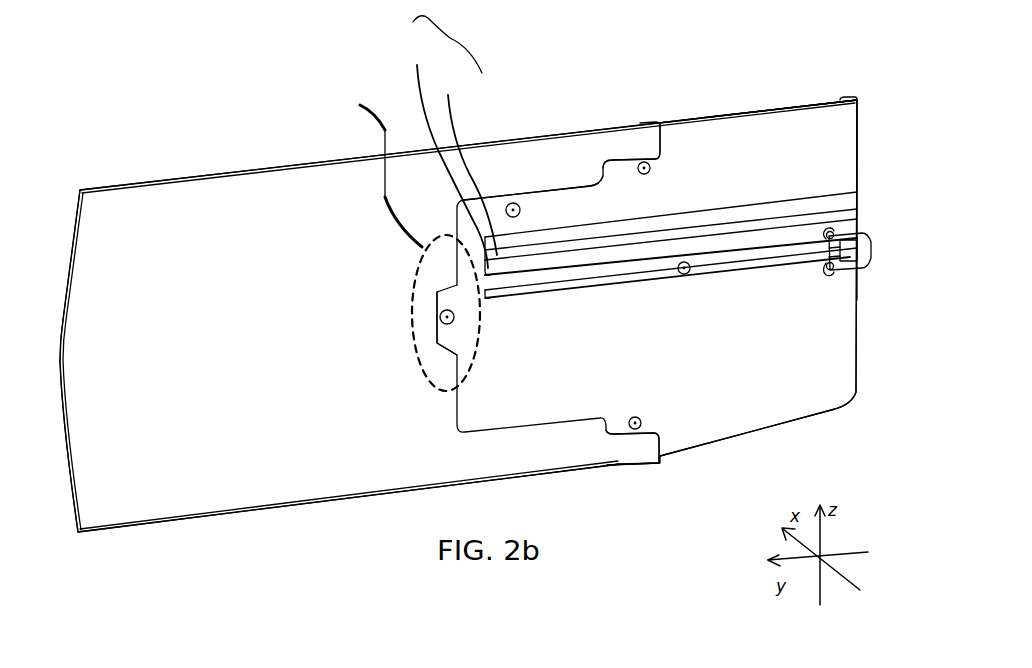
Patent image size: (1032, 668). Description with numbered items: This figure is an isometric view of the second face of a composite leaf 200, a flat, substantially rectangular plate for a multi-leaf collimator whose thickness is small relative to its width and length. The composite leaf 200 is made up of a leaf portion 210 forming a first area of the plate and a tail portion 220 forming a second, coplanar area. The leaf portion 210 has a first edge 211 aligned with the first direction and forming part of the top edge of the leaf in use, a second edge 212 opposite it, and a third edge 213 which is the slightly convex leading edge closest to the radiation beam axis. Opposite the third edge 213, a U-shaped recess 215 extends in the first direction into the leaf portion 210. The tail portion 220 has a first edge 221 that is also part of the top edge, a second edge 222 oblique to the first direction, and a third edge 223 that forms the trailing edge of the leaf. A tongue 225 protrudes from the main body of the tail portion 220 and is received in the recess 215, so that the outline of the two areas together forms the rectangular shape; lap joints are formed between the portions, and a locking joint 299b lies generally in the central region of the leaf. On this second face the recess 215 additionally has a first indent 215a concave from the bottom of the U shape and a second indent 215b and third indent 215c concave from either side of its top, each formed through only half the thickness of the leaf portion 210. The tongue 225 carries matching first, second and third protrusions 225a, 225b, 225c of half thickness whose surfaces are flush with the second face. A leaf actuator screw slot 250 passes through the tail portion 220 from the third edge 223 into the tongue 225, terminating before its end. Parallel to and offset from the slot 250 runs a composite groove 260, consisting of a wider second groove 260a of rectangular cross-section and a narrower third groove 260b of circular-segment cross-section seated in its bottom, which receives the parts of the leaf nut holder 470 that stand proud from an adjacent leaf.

The composite leaf 200 is at (145, 104).
The leaf portion 210 is at (471, 309).
The first edge 211 is at (316, 164).
The second edge 212 is at (273, 509).
The third edge 213 is at (60, 345).
The U-shaped recess 215 is at (513, 203).
The first indent 215a is at (440, 315).
The second indent 215b is at (635, 430).
The third indent 215c is at (644, 162).
The tail portion 220 is at (755, 167).
The first edge 221 is at (799, 106).
The second edge 222 is at (757, 432).
The third edge 223 is at (858, 150).
The tongue 225 is at (570, 210).
The first protrusion 225a is at (440, 345).
The second protrusion 225b is at (614, 432).
The third protrusion 225c is at (627, 172).
The leaf actuator screw slot 250 is at (684, 262).
The composite groove 260 is at (447, 42).
The second groove 260a is at (443, 153).
The third groove 260b is at (467, 159).
The joint 299b is at (379, 163).
The leaf nut holder 470 is at (870, 232).